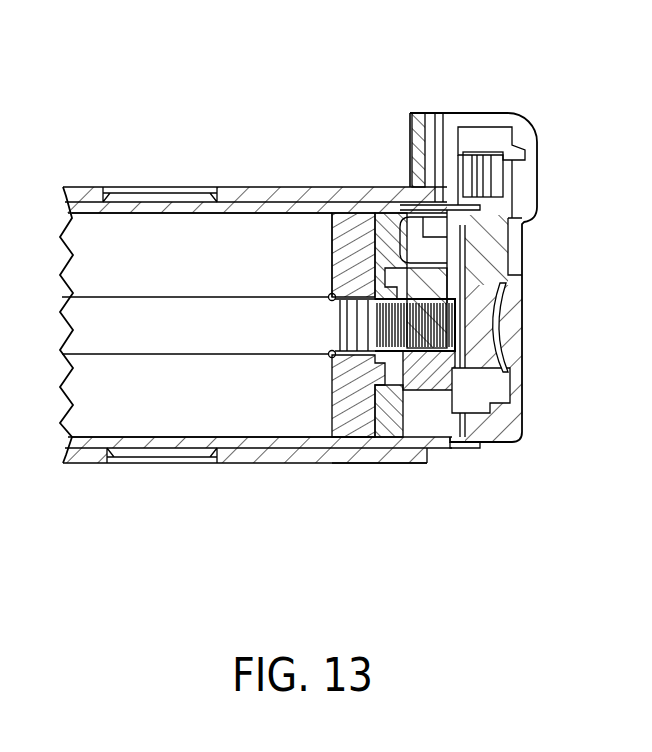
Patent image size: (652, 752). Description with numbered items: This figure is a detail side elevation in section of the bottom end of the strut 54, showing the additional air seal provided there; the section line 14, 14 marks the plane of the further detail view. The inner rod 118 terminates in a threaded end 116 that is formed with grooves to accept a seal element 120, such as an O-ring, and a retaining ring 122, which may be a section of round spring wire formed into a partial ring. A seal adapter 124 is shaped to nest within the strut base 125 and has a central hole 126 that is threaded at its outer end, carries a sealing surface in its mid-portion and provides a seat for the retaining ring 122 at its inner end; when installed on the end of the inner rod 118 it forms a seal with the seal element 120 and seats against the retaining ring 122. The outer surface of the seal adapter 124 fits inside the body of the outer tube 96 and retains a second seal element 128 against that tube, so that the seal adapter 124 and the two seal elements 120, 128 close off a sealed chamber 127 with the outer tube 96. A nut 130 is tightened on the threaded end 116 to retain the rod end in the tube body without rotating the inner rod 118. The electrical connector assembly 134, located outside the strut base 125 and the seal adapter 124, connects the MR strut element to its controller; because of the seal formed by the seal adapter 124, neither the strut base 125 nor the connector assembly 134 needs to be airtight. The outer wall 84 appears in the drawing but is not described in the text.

The section line 14- 14 is at (392, 102).
The strut 54 is at (237, 176).
The outer conduit wall 84 is at (395, 456).
The outer tube 96 is at (260, 215).
The threaded end 116 is at (427, 305).
The inner rod 118 is at (262, 341).
The seal element 120 is at (352, 386).
The retaining ring 122 is at (330, 359).
The seal adapter 124 is at (331, 262).
The strut base 125 is at (396, 408).
The central hole 126 is at (372, 282).
The sealed chamber 127 is at (150, 411).
The seal element 128 is at (363, 428).
The nut 130 is at (410, 282).
The electrical connector assembly 134 is at (545, 336).